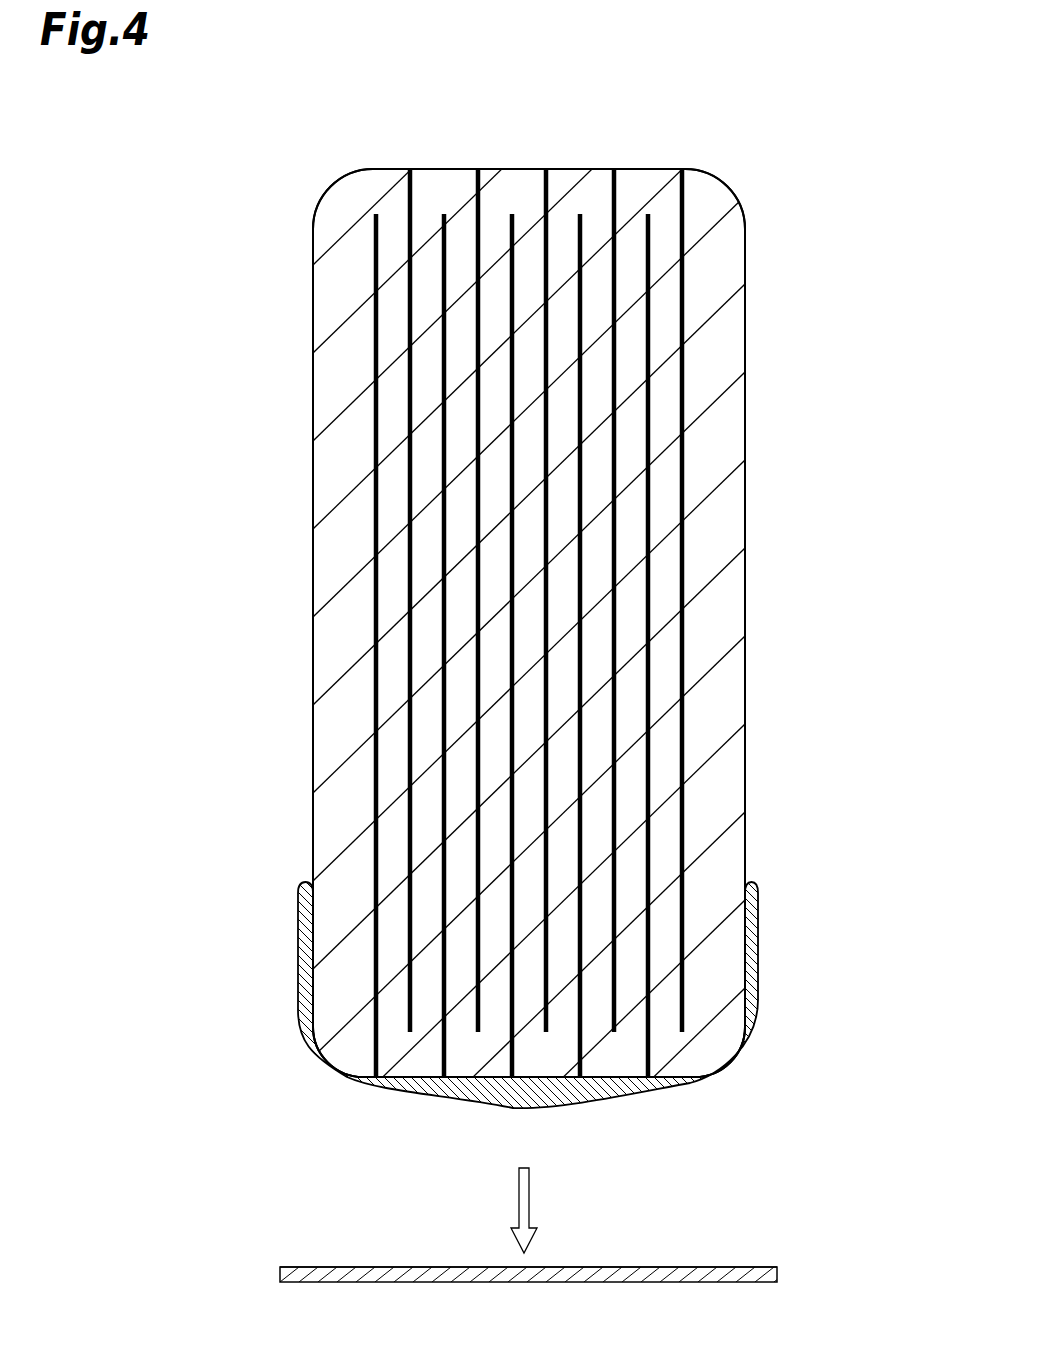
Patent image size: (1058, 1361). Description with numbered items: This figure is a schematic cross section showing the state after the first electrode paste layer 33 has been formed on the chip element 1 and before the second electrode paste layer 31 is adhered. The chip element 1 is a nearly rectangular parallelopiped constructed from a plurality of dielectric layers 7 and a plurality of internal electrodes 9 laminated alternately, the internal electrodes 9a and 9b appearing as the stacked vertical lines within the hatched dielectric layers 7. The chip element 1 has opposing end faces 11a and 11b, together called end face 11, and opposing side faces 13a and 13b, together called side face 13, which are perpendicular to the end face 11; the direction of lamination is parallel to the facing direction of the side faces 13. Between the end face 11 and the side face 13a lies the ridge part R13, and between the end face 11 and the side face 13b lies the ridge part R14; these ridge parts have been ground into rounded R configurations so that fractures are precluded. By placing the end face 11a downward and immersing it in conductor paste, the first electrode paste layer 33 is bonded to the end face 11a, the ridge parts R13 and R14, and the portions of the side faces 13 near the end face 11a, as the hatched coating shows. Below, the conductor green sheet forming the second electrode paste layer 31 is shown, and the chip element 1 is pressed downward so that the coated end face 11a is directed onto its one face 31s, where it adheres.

The chip element 1 is at (532, 680).
The dielectric layer 7 is at (649, 185).
The internal electrode 9 is at (603, 588).
The internal electrode 9a is at (684, 835).
The internal electrode 9b is at (407, 192).
The end face 11 is at (529, 633).
The end face 11a is at (480, 1083).
The end face 11b is at (520, 168).
The side face 13 is at (532, 628).
The side face 13a is at (313, 605).
The side face 13b is at (745, 605).
The ridge part R13 is at (328, 190).
The ridge part R14 is at (730, 197).
The first electrode paste layer 33 is at (750, 988).
The second electrode paste layer 31 is at (562, 1244).
The one face of the conductor green sheet 31s is at (764, 1260).